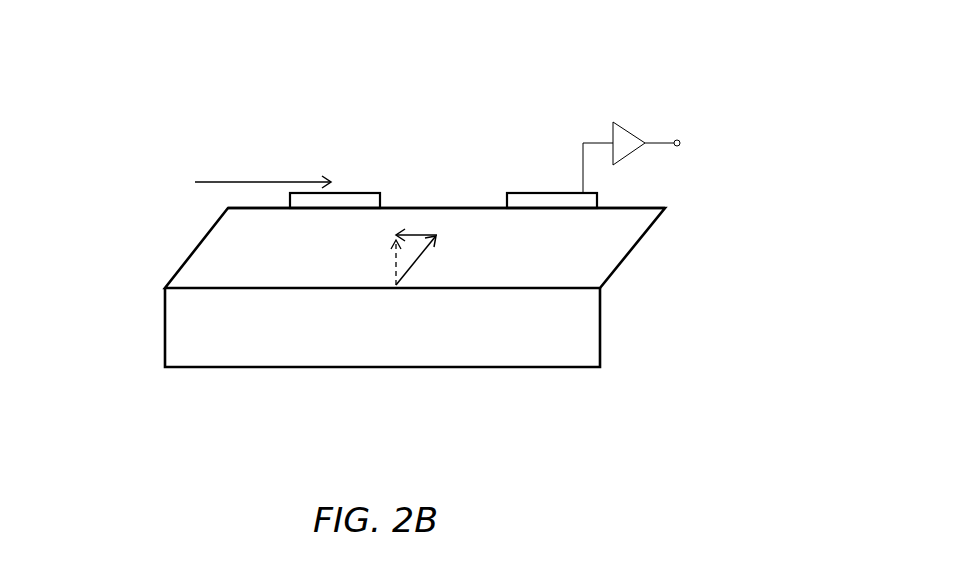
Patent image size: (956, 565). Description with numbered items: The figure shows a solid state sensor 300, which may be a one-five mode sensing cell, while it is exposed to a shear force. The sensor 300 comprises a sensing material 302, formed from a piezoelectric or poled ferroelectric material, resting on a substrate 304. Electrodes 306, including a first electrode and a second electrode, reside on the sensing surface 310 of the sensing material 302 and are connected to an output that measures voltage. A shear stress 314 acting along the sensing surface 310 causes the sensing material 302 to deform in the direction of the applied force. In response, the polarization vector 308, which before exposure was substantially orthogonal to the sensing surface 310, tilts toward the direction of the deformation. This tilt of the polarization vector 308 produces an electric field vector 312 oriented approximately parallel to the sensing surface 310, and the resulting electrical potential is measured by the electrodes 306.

The solid state sensor 300 is at (527, 63).
The sensing material 302 is at (215, 252).
The substrate 304 is at (220, 335).
The electrodes 306 is at (552, 198).
The polarization vector 308 is at (423, 278).
The sensing surface 310 is at (252, 208).
The electric field vector 312 is at (418, 202).
The shear stress 314 is at (255, 173).